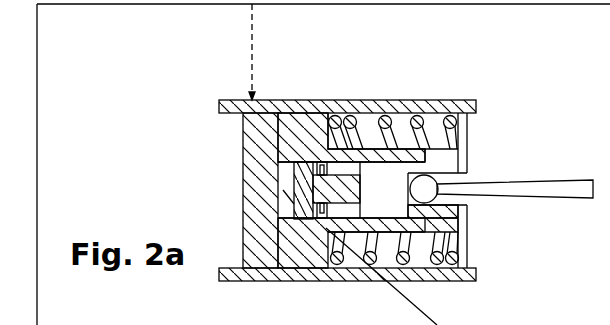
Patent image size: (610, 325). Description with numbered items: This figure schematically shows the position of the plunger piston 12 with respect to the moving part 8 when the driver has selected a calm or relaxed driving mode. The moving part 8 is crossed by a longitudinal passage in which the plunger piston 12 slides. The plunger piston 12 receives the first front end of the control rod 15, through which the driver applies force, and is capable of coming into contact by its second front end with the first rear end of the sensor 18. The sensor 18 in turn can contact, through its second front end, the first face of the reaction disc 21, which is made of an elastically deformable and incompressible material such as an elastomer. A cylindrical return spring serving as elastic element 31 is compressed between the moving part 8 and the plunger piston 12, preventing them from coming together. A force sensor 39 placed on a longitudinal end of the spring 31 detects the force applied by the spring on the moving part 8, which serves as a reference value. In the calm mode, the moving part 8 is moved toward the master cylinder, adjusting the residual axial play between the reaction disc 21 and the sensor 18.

The moving part 8 is at (305, 118).
The force sensor 39 is at (342, 137).
The elastic element 31 is at (388, 141).
The reaction disc 21 is at (250, 167).
The sensor 18 is at (292, 208).
The control rod 15 is at (543, 188).
The plunger piston 12 is at (445, 212).